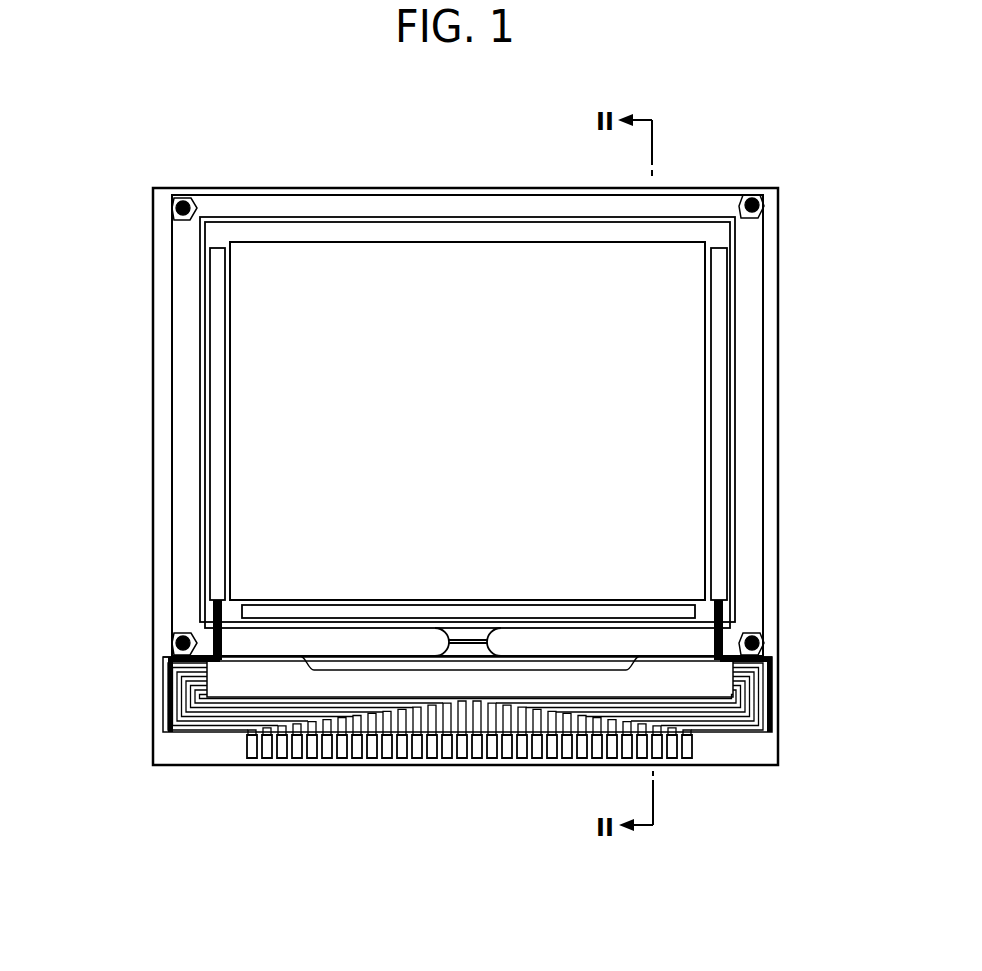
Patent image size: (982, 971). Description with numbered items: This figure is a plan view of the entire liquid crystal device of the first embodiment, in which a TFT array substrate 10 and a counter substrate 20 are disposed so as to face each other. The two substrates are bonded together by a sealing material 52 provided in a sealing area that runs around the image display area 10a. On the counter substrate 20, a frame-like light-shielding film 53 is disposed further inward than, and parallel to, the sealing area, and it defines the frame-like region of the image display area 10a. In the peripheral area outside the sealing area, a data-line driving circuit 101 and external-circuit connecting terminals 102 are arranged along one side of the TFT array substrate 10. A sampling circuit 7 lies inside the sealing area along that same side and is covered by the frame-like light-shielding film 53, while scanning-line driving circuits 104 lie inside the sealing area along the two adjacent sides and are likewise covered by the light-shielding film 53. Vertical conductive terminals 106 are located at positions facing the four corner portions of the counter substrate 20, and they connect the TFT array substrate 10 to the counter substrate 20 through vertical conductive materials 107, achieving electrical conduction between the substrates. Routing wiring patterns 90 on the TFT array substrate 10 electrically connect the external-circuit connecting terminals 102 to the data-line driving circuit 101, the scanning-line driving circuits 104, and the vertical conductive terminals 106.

The TFT array substrate 10 is at (283, 188).
The image display area 10a is at (275, 377).
The counter substrate 20 is at (487, 195).
The sealing material 52 is at (752, 352).
The scanning-line driving circuits 104 is at (722, 425).
The sampling circuit 7 is at (628, 617).
The frame-like light-shielding film 53 is at (728, 607).
The vertical conductive terminals 106 is at (190, 207).
The vertical conductive materials 107 is at (168, 650).
The routing wiring patterns 90 is at (165, 712).
The data-line driving circuit 101 is at (228, 687).
The external-circuit connecting terminals 102 is at (432, 742).